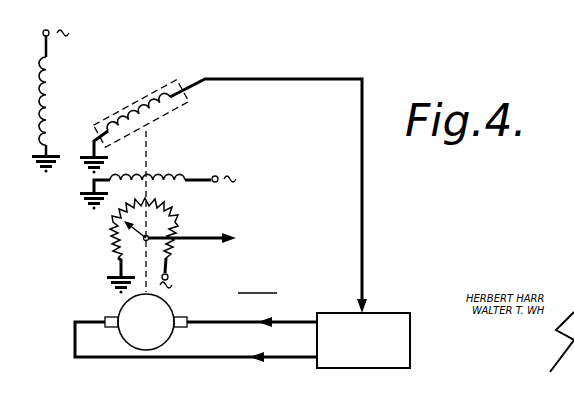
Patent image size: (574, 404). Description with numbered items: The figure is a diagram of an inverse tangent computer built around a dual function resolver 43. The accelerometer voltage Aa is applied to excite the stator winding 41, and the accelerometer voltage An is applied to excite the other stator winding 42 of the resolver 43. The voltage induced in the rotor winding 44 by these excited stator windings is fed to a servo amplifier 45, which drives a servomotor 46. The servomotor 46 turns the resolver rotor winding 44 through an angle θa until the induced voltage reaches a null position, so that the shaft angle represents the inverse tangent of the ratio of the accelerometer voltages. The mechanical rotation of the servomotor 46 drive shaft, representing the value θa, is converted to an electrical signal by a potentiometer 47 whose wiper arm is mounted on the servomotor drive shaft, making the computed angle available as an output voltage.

The stator winding 41 is at (150, 173).
The stator winding 42 is at (48, 85).
The dual function resolver 43 is at (262, 136).
The rotor winding 44 is at (136, 113).
The servo amplifier 45 is at (385, 313).
The servomotor 46 is at (172, 337).
The potentiometer 47 is at (113, 240).